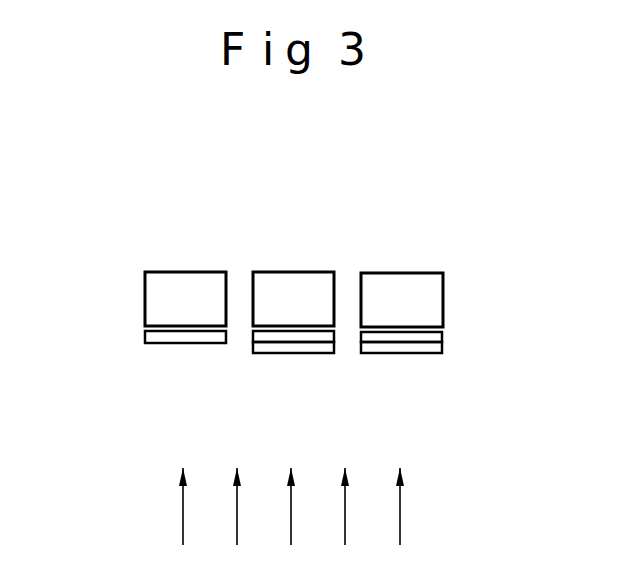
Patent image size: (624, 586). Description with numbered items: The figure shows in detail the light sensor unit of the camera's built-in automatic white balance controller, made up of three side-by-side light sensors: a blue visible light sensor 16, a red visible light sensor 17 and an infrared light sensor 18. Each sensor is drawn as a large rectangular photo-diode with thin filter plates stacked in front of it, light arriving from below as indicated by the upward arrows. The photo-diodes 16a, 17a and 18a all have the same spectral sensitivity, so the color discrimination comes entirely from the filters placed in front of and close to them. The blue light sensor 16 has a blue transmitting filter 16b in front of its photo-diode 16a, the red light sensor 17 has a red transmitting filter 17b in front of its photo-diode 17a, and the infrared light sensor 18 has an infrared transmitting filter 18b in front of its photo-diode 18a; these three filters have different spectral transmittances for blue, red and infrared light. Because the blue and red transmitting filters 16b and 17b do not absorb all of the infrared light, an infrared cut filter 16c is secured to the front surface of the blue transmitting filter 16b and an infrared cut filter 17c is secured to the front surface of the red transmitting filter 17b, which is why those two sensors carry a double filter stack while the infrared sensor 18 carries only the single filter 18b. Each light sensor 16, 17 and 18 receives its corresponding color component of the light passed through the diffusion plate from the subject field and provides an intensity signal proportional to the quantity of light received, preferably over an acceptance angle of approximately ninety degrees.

The blue visible light sensor 16 is at (456, 311).
The photo-diode 16a is at (408, 287).
The blue transmitting filter 16b is at (444, 337).
The infrared cut filter 16c is at (408, 348).
The red visible light sensor 17 is at (304, 289).
The photo-diode 17a is at (282, 285).
The red transmitting filter 17b is at (253, 333).
The infrared cut filter 17c is at (308, 348).
The infrared light sensor 18 is at (136, 309).
The photo-diode 18a is at (183, 285).
The infrared transmitting filter 18b is at (172, 345).